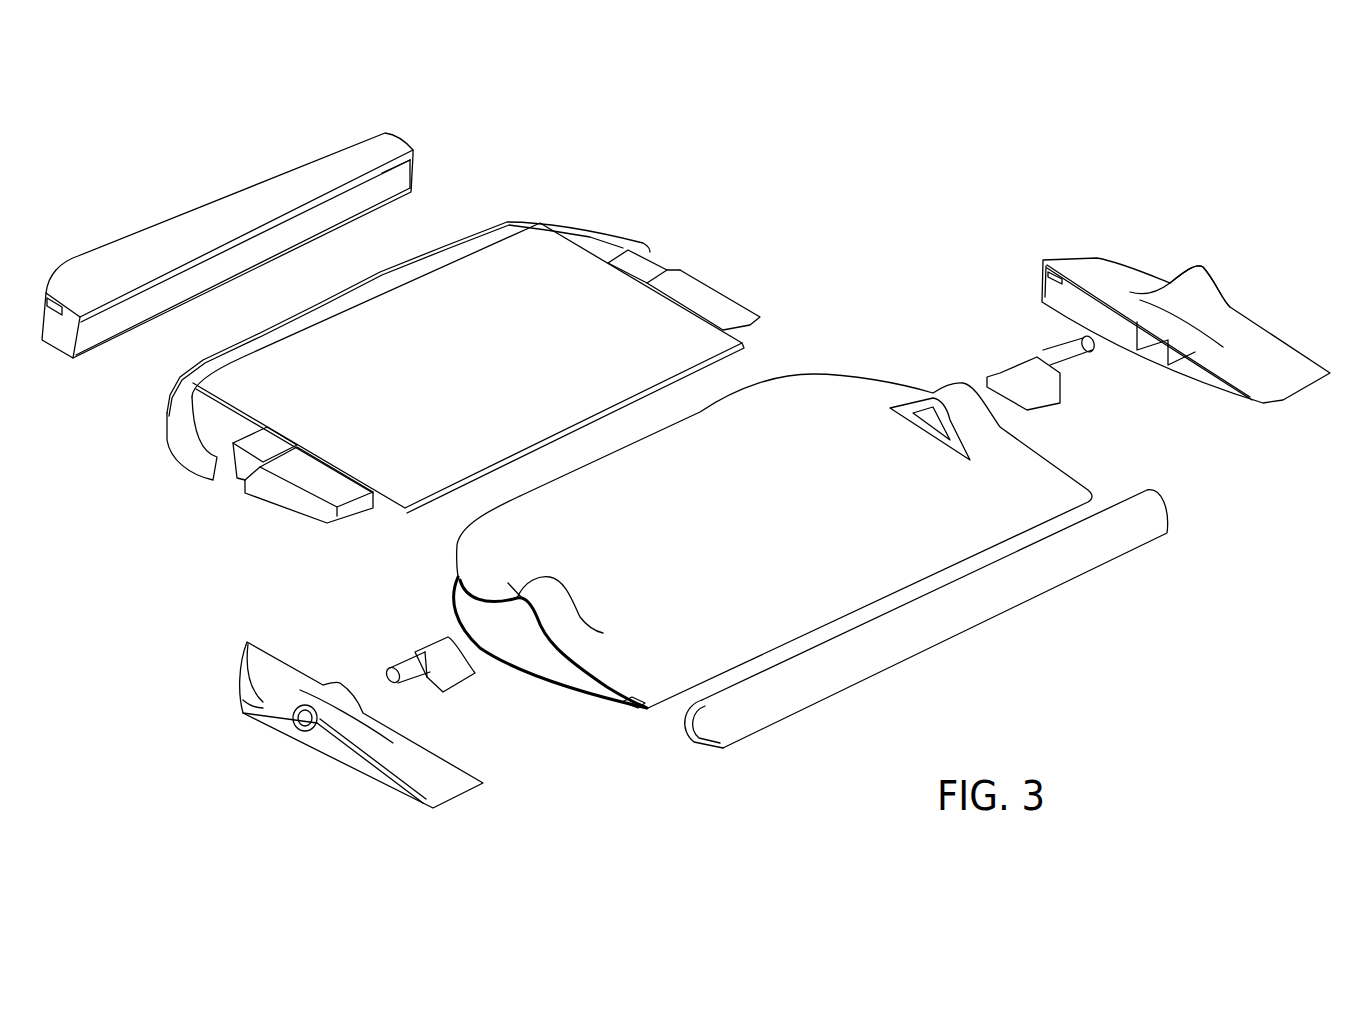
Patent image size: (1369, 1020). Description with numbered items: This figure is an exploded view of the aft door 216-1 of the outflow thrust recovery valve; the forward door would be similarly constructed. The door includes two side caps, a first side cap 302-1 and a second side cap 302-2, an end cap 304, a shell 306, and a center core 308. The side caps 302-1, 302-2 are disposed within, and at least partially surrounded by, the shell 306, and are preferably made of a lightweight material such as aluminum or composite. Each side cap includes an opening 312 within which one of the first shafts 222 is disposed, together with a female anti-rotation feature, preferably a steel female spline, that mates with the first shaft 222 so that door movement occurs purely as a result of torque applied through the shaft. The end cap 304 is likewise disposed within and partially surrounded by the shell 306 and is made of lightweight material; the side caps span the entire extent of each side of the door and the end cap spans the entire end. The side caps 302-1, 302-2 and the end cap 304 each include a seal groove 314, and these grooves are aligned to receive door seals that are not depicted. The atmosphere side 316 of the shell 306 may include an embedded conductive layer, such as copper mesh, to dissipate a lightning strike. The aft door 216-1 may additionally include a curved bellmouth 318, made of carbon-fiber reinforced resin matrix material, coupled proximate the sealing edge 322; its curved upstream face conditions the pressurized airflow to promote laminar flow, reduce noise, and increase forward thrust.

The end cap 304 is at (200, 207).
The seal groove 314 is at (58, 318).
The center core 308 is at (580, 237).
The sealing edge 322 is at (557, 433).
The shell 306 is at (840, 376).
The atmosphere side 316 is at (568, 692).
The curved bellmouth 318 is at (868, 672).
The second side cap 302-2 is at (1280, 347).
The opening 312 is at (1213, 273).
The first side cap 302-1 is at (307, 762).
The first shaft 222 is at (1067, 357).
The aft door 216-1 is at (925, 211).